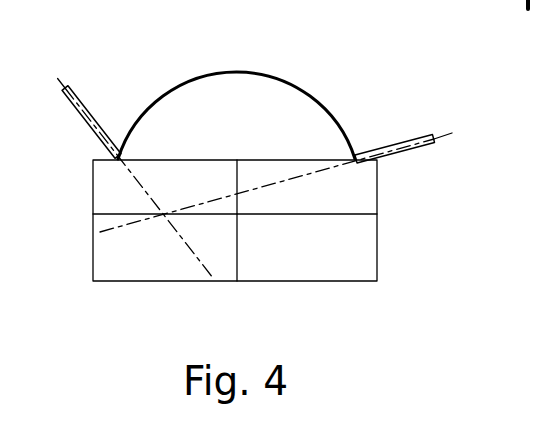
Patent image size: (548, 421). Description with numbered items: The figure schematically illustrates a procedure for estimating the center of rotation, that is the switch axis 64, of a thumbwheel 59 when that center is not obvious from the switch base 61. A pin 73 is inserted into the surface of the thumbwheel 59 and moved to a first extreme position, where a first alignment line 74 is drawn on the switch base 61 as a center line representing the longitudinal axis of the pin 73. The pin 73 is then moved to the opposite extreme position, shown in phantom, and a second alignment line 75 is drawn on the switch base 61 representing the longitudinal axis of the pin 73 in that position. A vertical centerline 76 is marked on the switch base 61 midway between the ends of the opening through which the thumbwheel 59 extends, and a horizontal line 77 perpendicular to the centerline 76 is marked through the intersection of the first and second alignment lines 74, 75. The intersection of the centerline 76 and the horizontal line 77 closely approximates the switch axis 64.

The thumbwheel 59 is at (233, 72).
The switch base 61 is at (377, 238).
The switch axis 64 is at (238, 215).
The pin 73 is at (70, 88).
The first alignment line 74 is at (139, 186).
The second alignment line 75 is at (327, 168).
The vertical centerline 76 is at (237, 257).
The horizontal line 77 is at (300, 215).